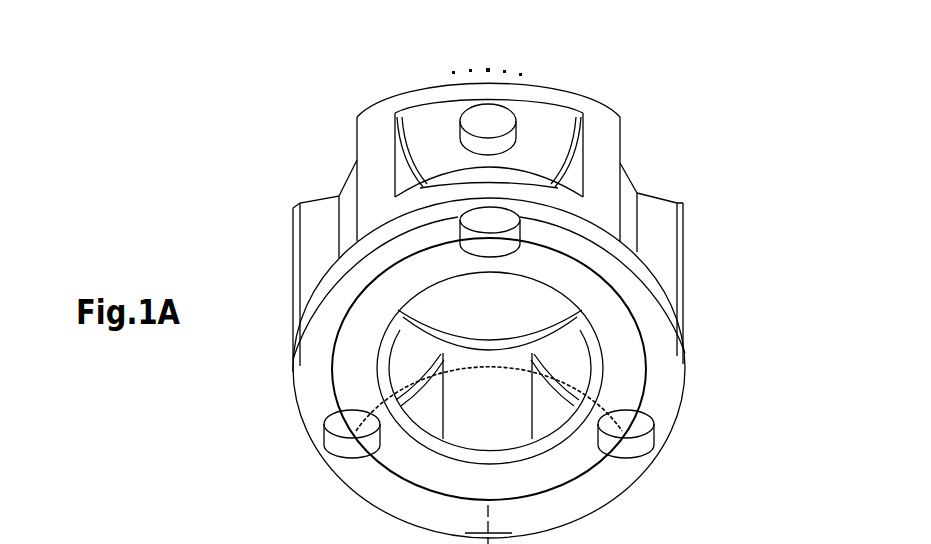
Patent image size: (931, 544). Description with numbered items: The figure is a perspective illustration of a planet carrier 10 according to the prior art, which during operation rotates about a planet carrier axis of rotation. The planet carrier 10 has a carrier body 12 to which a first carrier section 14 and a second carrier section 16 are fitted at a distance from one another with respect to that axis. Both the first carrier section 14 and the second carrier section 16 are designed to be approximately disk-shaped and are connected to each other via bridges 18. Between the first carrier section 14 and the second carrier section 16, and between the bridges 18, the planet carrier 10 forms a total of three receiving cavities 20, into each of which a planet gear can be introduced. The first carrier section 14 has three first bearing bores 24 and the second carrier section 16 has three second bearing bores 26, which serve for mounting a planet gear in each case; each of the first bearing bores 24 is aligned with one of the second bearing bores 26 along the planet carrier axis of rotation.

The planet carrier 10 is at (222, 81).
The carrier body 12 is at (534, 190).
The first carrier section 14 is at (663, 376).
The second carrier section 16 is at (544, 85).
The bridges 18 is at (489, 190).
The receiving cavities 20 is at (432, 143).
The first bearing bores 24 is at (628, 432).
The second bearing bores 26 is at (487, 122).